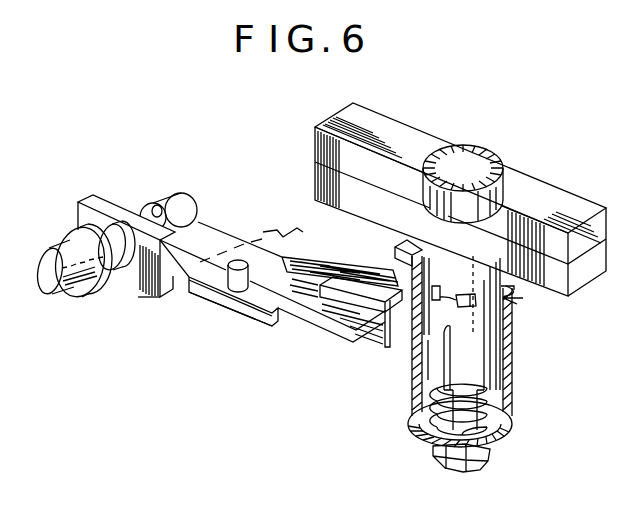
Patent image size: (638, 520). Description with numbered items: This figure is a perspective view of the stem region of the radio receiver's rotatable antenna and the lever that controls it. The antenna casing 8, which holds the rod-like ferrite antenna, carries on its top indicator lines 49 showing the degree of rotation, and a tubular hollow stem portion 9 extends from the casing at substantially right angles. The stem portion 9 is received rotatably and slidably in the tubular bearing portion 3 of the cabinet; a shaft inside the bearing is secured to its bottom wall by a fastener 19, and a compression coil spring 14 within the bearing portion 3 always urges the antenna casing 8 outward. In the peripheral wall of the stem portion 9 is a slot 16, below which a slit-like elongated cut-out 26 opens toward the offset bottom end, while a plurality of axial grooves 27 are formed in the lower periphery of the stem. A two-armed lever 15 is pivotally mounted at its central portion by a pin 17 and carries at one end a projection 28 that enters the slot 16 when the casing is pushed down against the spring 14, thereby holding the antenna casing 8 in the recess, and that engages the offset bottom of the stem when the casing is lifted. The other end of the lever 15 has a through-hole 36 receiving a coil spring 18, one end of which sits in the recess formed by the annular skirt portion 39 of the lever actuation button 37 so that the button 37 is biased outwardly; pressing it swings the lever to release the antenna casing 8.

The tubular bearing portion 3 is at (511, 353).
The antenna casing 8 is at (543, 193).
The stem portion 9 is at (516, 299).
The compression coil spring 14 is at (421, 428).
The two-armed lever 15 is at (207, 251).
The slot 16 is at (452, 298).
The pin 17 is at (248, 262).
The coil spring 18 is at (155, 208).
The fastener 19 is at (436, 460).
The elongated cut-out 26 is at (440, 360).
The axial grooves 27 is at (490, 367).
The projection 28 is at (457, 294).
The through-hole 36 is at (127, 276).
The lever actuation button 37 is at (57, 287).
The annular skirt portion 39 is at (74, 231).
The lines 49 is at (479, 198).